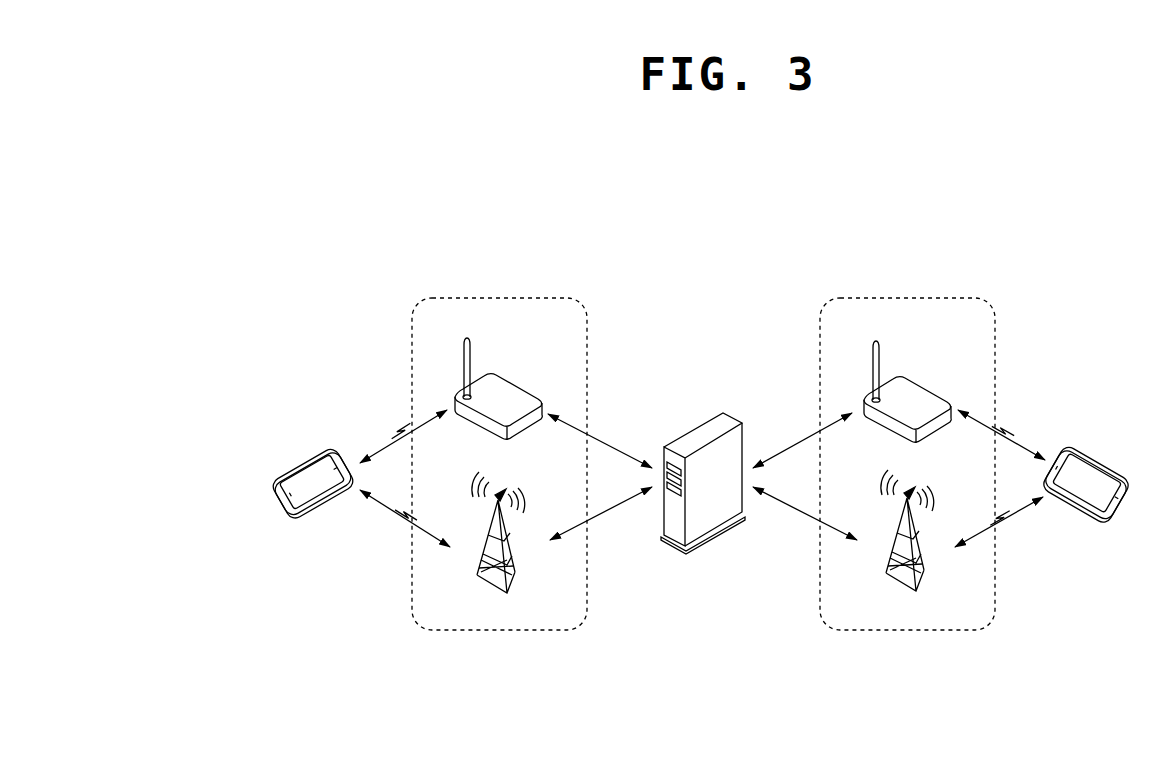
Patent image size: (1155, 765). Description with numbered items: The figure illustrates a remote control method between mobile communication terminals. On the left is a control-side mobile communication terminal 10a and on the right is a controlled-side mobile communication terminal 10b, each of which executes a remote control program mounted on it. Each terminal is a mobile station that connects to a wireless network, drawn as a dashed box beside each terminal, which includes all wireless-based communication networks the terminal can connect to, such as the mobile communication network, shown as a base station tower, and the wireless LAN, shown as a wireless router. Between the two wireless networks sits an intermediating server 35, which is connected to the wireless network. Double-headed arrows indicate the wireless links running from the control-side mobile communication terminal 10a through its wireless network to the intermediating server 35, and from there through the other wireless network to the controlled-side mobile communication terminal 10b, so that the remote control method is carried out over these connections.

The intermediating server 35 is at (706, 432).
The control-side mobile communication terminal 10a is at (298, 470).
The controlled-side mobile communication terminal 10b is at (1092, 475).